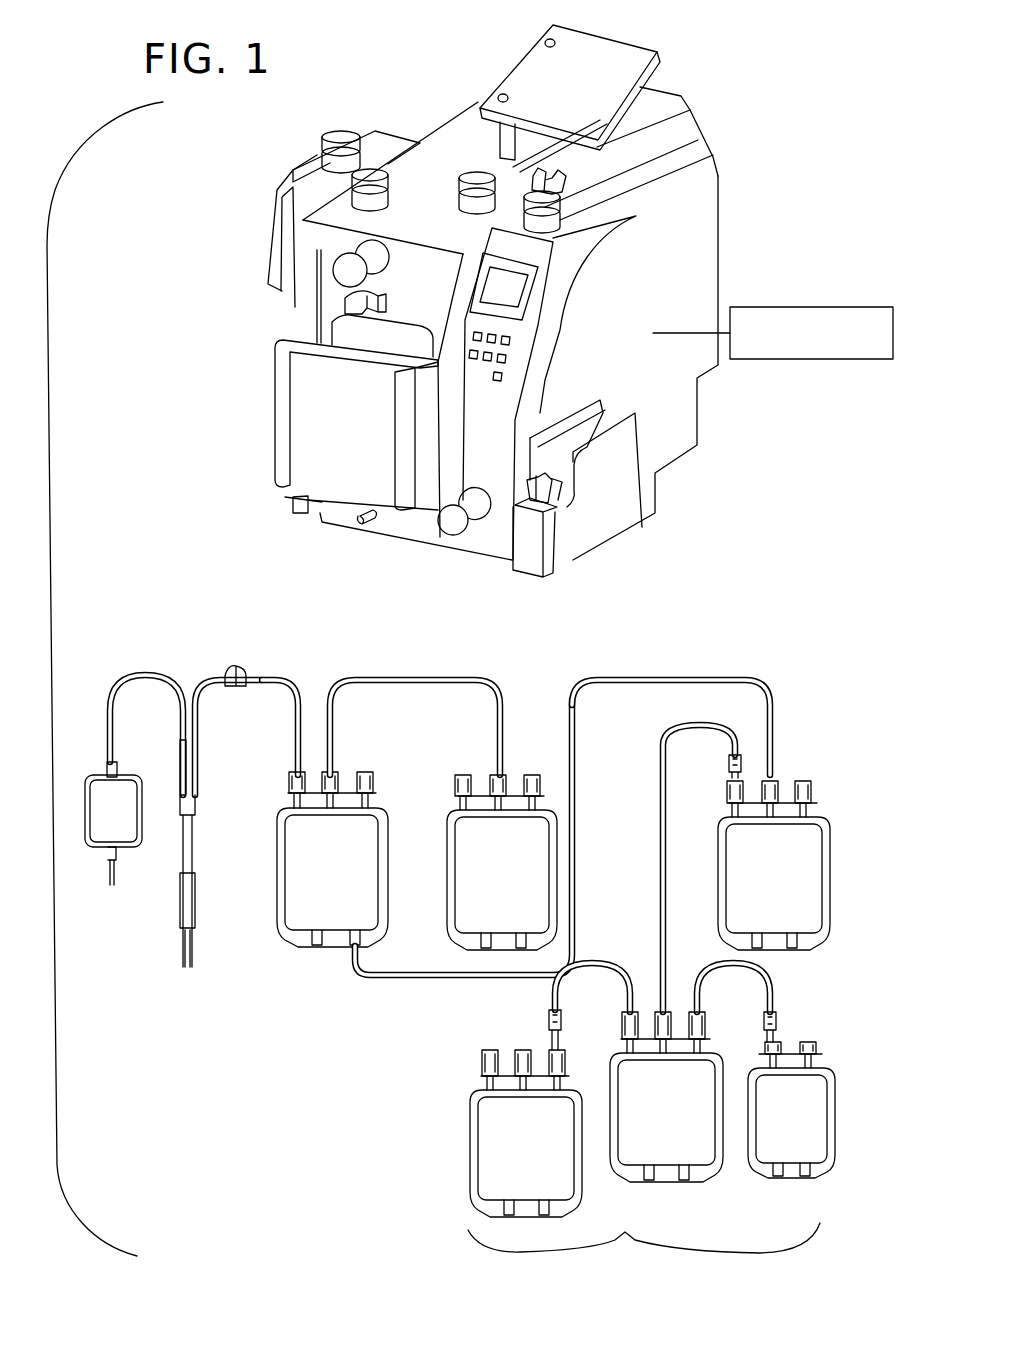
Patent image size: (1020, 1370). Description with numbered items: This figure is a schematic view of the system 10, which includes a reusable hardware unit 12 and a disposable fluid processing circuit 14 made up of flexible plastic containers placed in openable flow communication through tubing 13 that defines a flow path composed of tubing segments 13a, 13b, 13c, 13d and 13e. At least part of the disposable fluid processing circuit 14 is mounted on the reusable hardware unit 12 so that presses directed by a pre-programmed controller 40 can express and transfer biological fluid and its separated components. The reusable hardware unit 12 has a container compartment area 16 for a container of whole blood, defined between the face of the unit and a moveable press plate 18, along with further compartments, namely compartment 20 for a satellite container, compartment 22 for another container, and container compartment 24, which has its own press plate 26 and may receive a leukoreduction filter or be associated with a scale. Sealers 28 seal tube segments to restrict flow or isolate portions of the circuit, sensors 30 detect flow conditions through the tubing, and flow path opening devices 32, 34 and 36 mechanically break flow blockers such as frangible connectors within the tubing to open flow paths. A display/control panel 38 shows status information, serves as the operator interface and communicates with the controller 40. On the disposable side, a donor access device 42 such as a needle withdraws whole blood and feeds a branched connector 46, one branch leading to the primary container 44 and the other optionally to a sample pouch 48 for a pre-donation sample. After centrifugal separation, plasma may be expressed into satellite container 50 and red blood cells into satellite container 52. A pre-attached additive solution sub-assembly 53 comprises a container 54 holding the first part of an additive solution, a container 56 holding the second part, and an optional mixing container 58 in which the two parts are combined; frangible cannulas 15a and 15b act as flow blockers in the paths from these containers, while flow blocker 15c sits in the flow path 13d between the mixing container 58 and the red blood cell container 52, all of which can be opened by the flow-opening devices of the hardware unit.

The system 10 is at (95, 679).
The reusable hardware unit 12 is at (554, 331).
The tubing 13 is at (186, 714).
The tubing segment 13a is at (307, 708).
The tubing segment 13b is at (415, 701).
The tubing segment 13c is at (463, 868).
The tubing segment 13d is at (665, 868).
The tubing segment 13e is at (671, 708).
The disposable fluid processing circuit 14 is at (866, 774).
The frangible cannula 15a is at (565, 1006).
The frangible cannula 15b is at (767, 1002).
The flow blocker 15c is at (703, 780).
The container compartment area 16 is at (337, 380).
The press plate 18 is at (288, 500).
The compartment 20 is at (333, 151).
The compartment 22 is at (604, 537).
The container compartment 24 is at (618, 119).
The press plate 26 is at (585, 90).
The sealer 28 is at (360, 414).
The sensor 30 is at (492, 203).
The flow path opening device 32 is at (346, 337).
The flow path opening device 34 is at (506, 162).
The flow path opening device 36 is at (584, 469).
The display/control panel 38 is at (541, 394).
The controller 40 is at (773, 305).
The donor access device 42 is at (167, 983).
The primary container 44 is at (300, 859).
The branched connector 46 is at (217, 853).
The sample pouch 48 is at (121, 844).
The satellite container 50 is at (478, 862).
The satellite container 52 is at (751, 865).
The additive solution sub-assembly 53 is at (644, 1255).
The container 54 is at (490, 1133).
The container 56 is at (805, 1106).
The mixing container 58 is at (646, 1097).